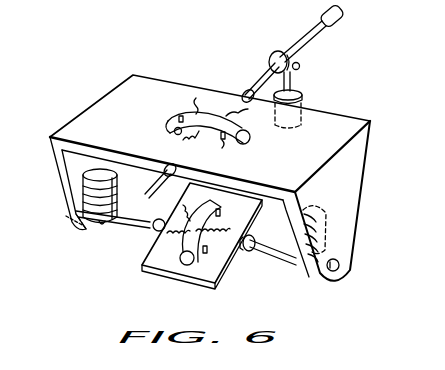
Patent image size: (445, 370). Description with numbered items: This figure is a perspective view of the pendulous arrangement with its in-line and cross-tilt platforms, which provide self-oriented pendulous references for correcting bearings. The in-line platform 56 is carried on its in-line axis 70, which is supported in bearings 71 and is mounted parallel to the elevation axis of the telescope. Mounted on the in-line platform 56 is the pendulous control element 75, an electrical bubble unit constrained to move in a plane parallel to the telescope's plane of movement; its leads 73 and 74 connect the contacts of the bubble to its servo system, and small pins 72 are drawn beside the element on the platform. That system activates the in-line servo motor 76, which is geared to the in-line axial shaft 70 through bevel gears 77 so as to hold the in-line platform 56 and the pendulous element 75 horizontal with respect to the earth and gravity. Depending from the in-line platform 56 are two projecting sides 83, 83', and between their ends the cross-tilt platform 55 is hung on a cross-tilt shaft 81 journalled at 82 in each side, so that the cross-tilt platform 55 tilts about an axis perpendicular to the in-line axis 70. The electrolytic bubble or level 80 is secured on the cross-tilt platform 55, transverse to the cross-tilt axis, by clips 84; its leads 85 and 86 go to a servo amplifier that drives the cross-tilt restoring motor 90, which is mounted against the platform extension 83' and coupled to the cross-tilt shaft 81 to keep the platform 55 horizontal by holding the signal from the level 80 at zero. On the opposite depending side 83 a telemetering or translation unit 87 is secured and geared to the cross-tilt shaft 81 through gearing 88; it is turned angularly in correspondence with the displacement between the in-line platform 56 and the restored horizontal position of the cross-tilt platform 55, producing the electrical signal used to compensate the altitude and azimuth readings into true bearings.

The in-line platform 56 is at (141, 123).
The projecting side 83 is at (56, 183).
The projecting side 83' is at (345, 201).
The telemetering or translation unit 87 is at (73, 223).
The gearing 88 is at (99, 230).
The cross-tilt shaft 81 is at (142, 226).
The in-line axis 70 is at (150, 196).
The bearings 71 is at (339, 32).
The bevel gears 77 is at (300, 66).
The in-line servo motor 76 is at (305, 101).
The lead 73 is at (216, 125).
The pendulous control element 75 is at (253, 141).
The pin 72 is at (180, 116).
The lead 74 is at (181, 145).
The cross-tilt restoring motor 90 is at (326, 233).
The journal 82 is at (340, 265).
The cross-tilt platform 55 is at (173, 262).
The electrolytic bubble or level 80 is at (191, 268).
The clips 84 is at (222, 213).
The leads 85 is at (184, 206).
The lead 86 is at (213, 239).